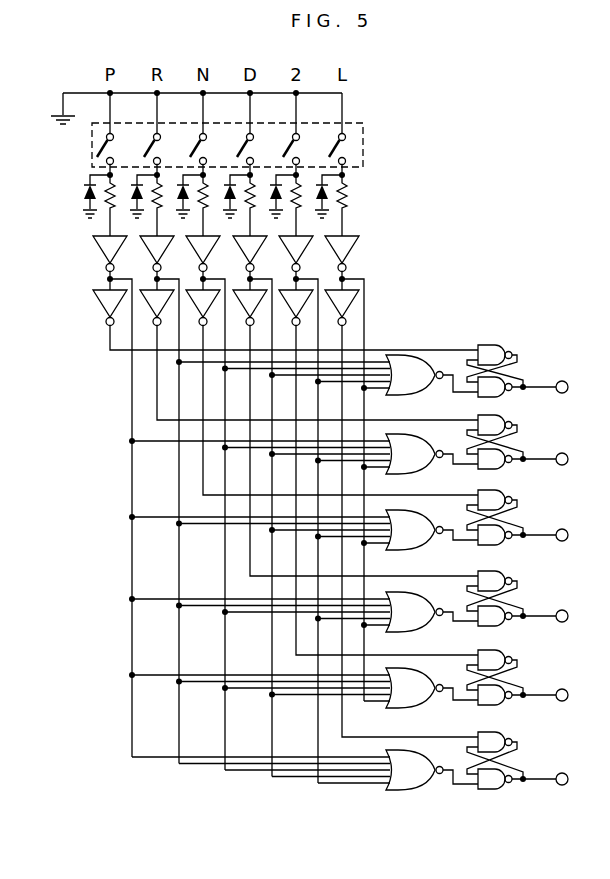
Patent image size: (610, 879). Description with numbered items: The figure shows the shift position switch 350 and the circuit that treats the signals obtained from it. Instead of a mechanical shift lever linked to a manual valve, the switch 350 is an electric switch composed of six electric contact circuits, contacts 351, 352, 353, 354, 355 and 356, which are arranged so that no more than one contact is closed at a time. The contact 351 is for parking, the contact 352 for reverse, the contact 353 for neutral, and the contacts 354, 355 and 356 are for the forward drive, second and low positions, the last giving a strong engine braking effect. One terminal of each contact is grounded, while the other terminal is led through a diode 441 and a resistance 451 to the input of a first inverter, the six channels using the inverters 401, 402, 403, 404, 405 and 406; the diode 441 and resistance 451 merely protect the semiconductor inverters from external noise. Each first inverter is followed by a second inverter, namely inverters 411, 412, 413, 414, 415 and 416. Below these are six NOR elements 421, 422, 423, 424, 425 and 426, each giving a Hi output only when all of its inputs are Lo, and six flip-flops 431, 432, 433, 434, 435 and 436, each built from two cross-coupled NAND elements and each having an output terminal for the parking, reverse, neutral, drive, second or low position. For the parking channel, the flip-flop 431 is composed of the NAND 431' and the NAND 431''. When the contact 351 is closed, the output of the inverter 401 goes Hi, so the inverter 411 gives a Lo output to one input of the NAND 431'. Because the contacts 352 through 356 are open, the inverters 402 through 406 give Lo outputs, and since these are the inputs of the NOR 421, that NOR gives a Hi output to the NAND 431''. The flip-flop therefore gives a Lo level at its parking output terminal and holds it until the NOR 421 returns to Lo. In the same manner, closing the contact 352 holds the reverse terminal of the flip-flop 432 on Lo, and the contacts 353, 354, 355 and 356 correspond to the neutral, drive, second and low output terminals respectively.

The shift position switch 350 is at (365, 146).
The contact 351 is at (99, 150).
The contact 352 is at (148, 146).
The contact 353 is at (194, 146).
The contact 354 is at (241, 146).
The contact 355 is at (287, 146).
The contact 356 is at (333, 146).
The diode 441 is at (82, 192).
The resistance 451 is at (103, 205).
The inverter 401 is at (97, 250).
The inverter 402 is at (150, 247).
The inverter 403 is at (194, 247).
The inverter 404 is at (266, 238).
The inverter 405 is at (306, 247).
The inverter 406 is at (350, 250).
The inverter 411 is at (103, 307).
The inverter 412 is at (150, 304).
The inverter 413 is at (194, 303).
The inverter 414 is at (241, 302).
The inverter 415 is at (307, 300).
The inverter 416 is at (350, 305).
The NOR 421 is at (405, 355).
The NOR 422 is at (406, 434).
The NOR 423 is at (406, 510).
The NOR 424 is at (406, 592).
The NOR 425 is at (406, 668).
The NOR 426 is at (406, 750).
The flip-flop 431 is at (528, 371).
The NAND 431' is at (491, 340).
The NAND 431'' is at (514, 399).
The flip-flop 432 is at (528, 441).
The flip-flop 433 is at (528, 516).
The flip-flop 434 is at (528, 597).
The flip-flop 435 is at (528, 676).
The flip-flop 436 is at (528, 758).